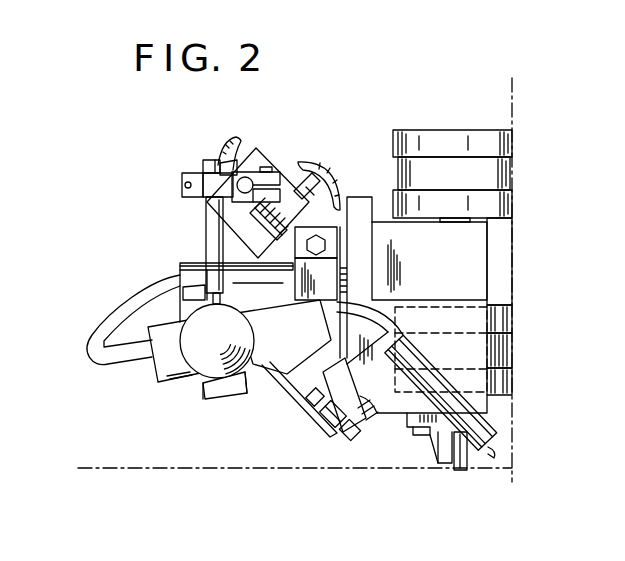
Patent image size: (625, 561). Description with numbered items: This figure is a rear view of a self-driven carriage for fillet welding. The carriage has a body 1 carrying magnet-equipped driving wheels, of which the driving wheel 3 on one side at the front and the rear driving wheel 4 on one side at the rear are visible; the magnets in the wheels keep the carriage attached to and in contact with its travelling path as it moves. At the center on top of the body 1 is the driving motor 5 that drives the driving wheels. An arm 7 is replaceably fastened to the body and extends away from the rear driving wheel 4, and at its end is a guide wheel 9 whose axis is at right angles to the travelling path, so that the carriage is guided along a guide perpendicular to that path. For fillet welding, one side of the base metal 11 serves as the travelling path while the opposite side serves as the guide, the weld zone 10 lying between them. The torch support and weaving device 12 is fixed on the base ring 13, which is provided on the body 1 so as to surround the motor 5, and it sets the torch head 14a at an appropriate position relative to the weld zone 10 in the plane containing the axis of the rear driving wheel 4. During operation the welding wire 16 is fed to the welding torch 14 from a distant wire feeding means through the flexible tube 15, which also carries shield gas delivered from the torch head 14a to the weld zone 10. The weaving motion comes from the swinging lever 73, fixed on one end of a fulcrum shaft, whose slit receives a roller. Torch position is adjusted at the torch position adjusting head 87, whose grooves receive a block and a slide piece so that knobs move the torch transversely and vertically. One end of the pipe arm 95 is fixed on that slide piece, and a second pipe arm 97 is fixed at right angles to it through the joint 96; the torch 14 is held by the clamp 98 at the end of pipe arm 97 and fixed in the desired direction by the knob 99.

The body 1 is at (480, 259).
The driving wheel 3 is at (508, 333).
The rear driving wheel 4 is at (437, 130).
The driving motor 5 is at (197, 264).
The arm 7 is at (438, 458).
The guide wheel 9 is at (462, 472).
The weld zone 10 is at (513, 484).
The base metal 11 is at (101, 466).
The torch support and weaving device 12 is at (198, 210).
The base ring 13 is at (337, 232).
The welding torch 14 is at (180, 380).
The torch head 14a is at (495, 430).
The flexible tube 15 is at (102, 322).
The welding wire 16 is at (493, 455).
The swinging lever 73 is at (313, 420).
The torch position adjusting head 87 is at (251, 163).
The pipe arm 95 is at (249, 159).
The joint 96 is at (182, 185).
The pipe arm 97 is at (208, 232).
The clamp 98 is at (207, 397).
The knob 99 is at (238, 392).